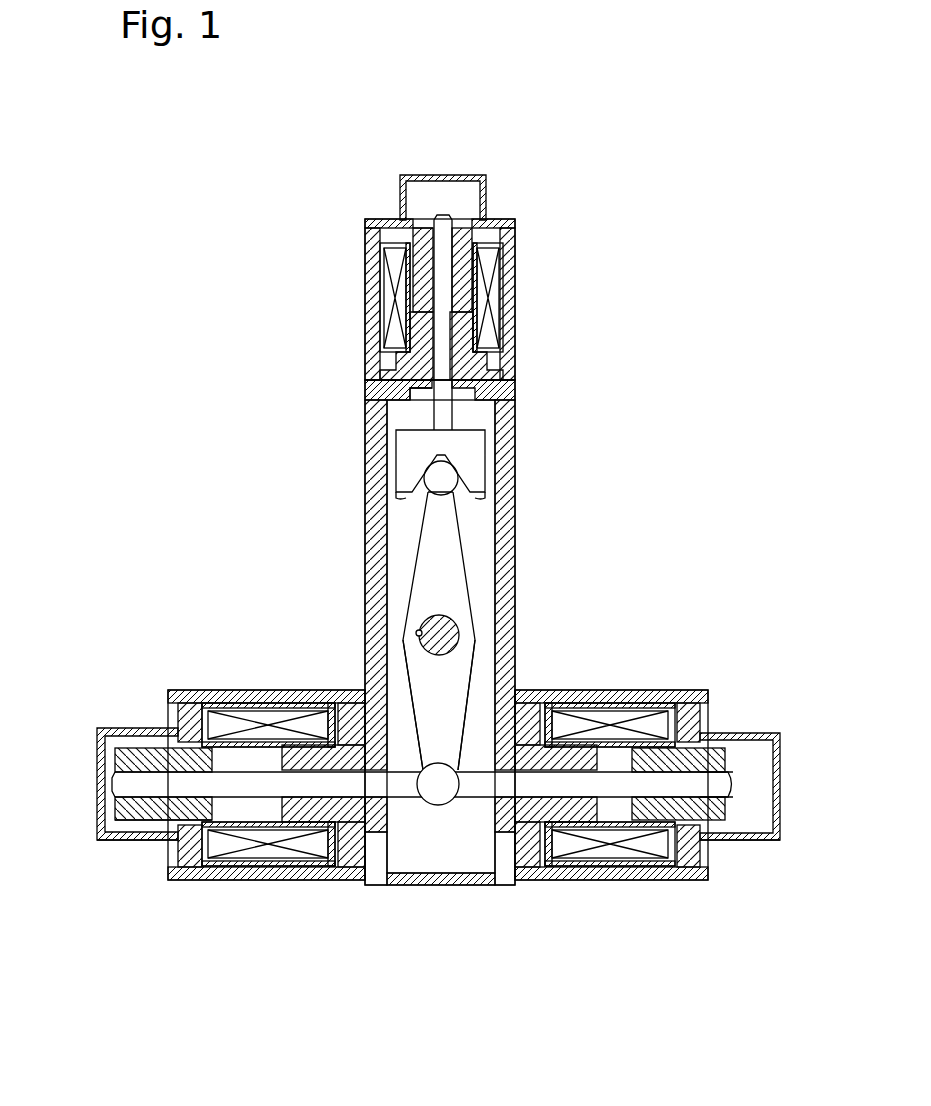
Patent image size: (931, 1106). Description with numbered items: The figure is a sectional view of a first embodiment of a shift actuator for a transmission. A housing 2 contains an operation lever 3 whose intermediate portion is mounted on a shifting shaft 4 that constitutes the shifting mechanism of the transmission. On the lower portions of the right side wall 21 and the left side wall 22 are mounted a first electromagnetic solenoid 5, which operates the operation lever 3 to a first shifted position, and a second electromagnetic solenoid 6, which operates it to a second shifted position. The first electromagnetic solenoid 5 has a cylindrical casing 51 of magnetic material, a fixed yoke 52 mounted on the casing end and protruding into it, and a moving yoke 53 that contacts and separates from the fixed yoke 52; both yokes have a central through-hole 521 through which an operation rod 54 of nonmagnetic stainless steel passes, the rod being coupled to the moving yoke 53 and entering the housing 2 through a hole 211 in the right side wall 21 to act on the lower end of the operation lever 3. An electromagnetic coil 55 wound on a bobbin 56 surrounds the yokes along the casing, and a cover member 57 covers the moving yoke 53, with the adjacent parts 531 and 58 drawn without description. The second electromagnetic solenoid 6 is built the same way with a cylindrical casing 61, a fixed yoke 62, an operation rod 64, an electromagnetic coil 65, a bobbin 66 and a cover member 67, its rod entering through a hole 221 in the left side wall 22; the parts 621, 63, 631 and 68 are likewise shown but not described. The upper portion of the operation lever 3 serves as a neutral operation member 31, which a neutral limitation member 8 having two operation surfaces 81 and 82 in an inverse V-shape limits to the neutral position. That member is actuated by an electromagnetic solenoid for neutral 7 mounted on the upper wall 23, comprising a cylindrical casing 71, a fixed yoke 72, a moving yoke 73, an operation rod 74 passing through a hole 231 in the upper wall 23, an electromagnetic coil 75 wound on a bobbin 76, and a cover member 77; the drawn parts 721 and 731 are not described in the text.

The housing 2 is at (622, 470).
The right side wall 21 is at (505, 585).
The left side wall 22 is at (376, 620).
The upper wall 23 is at (482, 393).
The hole 231 is at (425, 394).
The hole 221 is at (380, 834).
The hole 211 is at (505, 840).
The operation lever 3 is at (415, 668).
The neutral operation member 31 is at (457, 543).
The shifting shaft 4 is at (452, 633).
The neutral limitation member 8 is at (408, 447).
The operation surface 81 is at (487, 498).
The operation surface 82 is at (396, 500).
The electromagnetic solenoid for neutral 7 is at (333, 190).
The cylindrical casing 71 is at (367, 296).
The fixed yoke 72 is at (392, 366).
The bobbin wall 721 is at (408, 331).
The moving yoke 73 is at (422, 258).
The plunger top end 731 is at (420, 228).
The operation rod 74 is at (442, 243).
The electromagnetic coil 75 is at (490, 276).
The bobbin 76 is at (478, 306).
The cover member 77 is at (467, 175).
The first electromagnetic solenoid 5 is at (722, 662).
The cylindrical casing 51 is at (660, 690).
The fixed yoke 52 is at (526, 745).
The through-hole 521 is at (578, 750).
The moving yoke 53 is at (690, 705).
The right end cap 531 is at (718, 742).
The operation rod 54 is at (722, 786).
The electromagnetic coil 55 is at (635, 855).
The bobbin 56 is at (580, 853).
The cover member 57 is at (776, 820).
The right rotor 58 is at (615, 757).
The second electromagnetic solenoid 6 is at (157, 658).
The cylindrical casing 61 is at (188, 690).
The fixed yoke 62 is at (350, 745).
The left stator bobbin 621 is at (268, 720).
The left end cap 63 is at (135, 746).
The left cap wall 631 is at (148, 830).
The operation rod 64 is at (123, 783).
The electromagnetic coil 65 is at (280, 853).
The bobbin 66 is at (228, 852).
The cover member 67 is at (100, 830).
The left rotor 68 is at (226, 757).